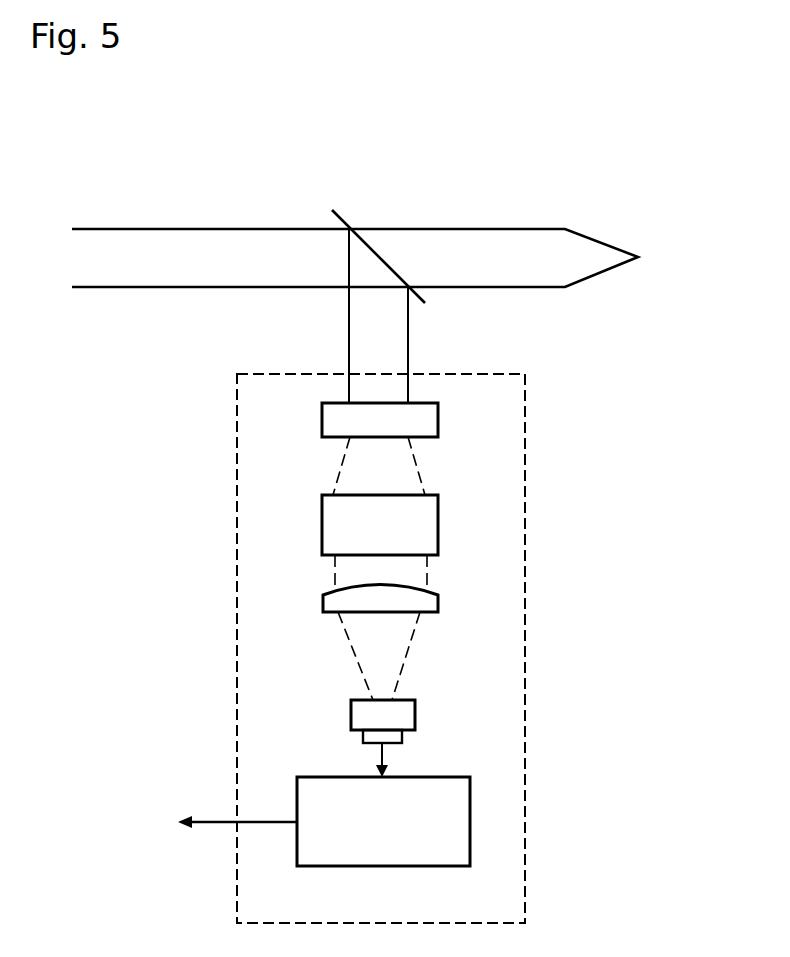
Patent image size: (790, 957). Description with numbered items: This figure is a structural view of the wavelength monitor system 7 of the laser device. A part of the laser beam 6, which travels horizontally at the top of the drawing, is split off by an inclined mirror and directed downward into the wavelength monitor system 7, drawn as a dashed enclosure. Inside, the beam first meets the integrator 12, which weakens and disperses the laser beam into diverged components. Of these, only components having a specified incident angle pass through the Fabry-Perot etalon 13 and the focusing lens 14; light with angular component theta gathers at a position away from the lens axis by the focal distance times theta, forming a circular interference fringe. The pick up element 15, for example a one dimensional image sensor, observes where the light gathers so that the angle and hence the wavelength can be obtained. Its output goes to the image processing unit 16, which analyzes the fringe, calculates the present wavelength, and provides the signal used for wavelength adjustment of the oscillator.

The laser beam 6 is at (178, 228).
The wavelength monitor system 7 is at (525, 390).
The integrator 12 is at (438, 422).
The Fabry-Perot etalon 13 is at (438, 522).
The focusing lens 14 is at (438, 603).
The pick up element 15 is at (415, 710).
The image processing unit 16 is at (470, 805).